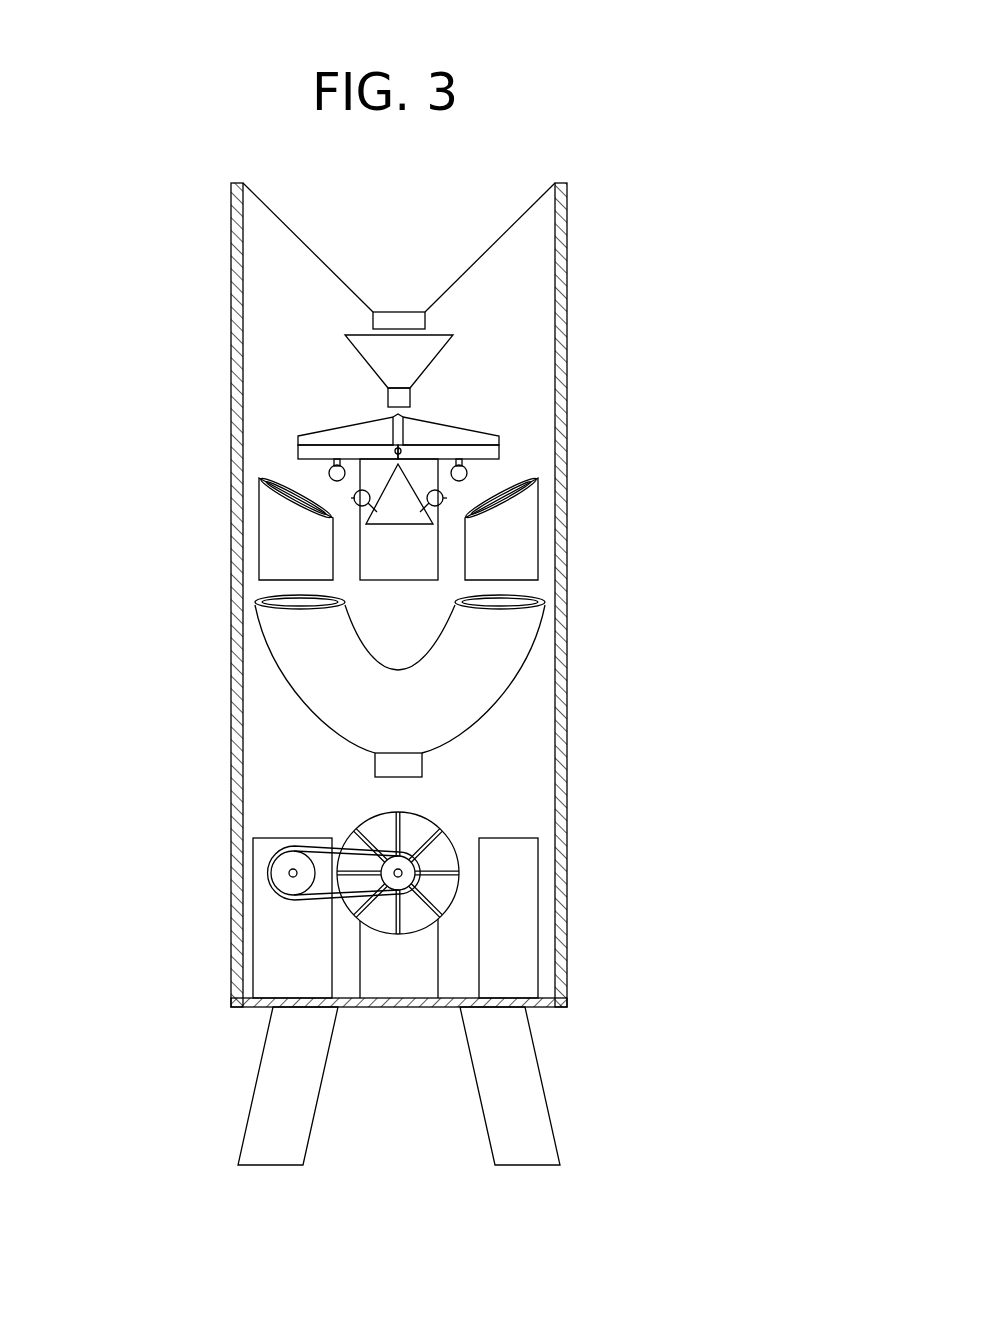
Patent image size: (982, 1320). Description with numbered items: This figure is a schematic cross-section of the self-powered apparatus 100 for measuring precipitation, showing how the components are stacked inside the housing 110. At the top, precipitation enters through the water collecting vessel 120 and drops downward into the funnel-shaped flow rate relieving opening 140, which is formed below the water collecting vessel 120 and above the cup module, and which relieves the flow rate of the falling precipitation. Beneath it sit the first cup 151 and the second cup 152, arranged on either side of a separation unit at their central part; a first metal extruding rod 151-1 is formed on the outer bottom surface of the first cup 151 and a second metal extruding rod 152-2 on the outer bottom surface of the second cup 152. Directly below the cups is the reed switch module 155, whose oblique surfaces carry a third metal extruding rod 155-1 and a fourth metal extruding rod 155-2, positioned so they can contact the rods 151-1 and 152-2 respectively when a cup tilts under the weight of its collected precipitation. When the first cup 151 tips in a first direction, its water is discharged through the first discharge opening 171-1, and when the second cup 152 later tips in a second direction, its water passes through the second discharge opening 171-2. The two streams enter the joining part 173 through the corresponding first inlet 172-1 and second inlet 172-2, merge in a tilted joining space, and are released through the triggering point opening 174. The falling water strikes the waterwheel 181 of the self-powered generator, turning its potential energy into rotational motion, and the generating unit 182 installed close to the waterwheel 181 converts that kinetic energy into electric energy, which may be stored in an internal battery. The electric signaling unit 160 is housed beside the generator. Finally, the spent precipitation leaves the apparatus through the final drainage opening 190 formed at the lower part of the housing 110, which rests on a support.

The self-powered apparatus for measuring precipitation 100 is at (115, 153).
The housing 110 is at (231, 322).
The water collecting vessel 120 is at (463, 275).
The flow rate relieving opening 140 is at (430, 370).
The first cup 151 is at (345, 432).
The second cup 152 is at (447, 435).
The (1-1)-st metal extruding rod 151-1 is at (297, 452).
The (1-2)-nd metal extruding rod 152-2 is at (500, 452).
The reed switch module 155 is at (397, 507).
The (2-1)-st metal extruding rod 155-1 is at (329, 473).
The (2-2)-nd metal extruding rod 155-2 is at (467, 473).
The first discharge opening 171-1 is at (283, 560).
The second discharge opening 171-2 is at (513, 560).
The first inlet 172-1 is at (282, 602).
The second inlet 172-2 is at (515, 603).
The joining part 173 is at (415, 717).
The triggering point opening 174 is at (395, 765).
The waterwheel 181 is at (383, 835).
The generating unit 182 is at (287, 925).
The electric signaling unit 160 is at (513, 901).
The final drainage opening 190 is at (397, 1000).